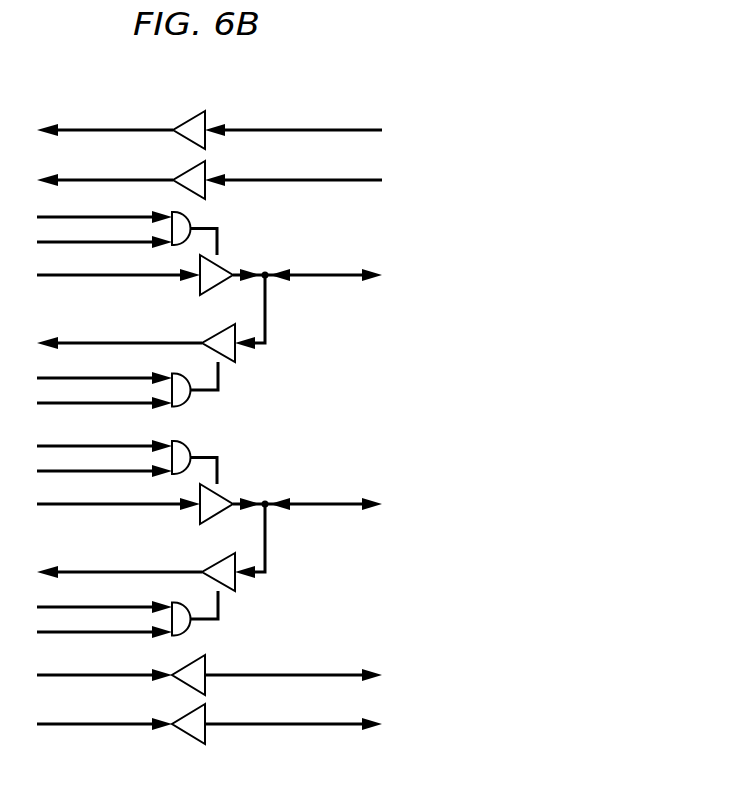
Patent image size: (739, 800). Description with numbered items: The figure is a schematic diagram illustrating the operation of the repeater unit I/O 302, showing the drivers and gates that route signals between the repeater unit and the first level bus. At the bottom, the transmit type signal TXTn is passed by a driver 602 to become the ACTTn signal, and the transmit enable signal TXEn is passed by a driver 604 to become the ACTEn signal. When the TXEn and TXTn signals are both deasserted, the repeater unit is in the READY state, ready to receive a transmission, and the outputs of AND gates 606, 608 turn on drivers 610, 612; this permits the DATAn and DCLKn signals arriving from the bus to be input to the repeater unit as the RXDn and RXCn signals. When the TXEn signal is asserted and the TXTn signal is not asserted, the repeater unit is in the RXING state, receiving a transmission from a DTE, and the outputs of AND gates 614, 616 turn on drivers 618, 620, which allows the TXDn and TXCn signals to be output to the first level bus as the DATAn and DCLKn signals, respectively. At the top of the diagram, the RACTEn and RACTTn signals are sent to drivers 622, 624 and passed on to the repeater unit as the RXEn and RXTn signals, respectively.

The repeater unit I/O 302 is at (378, 82).
The driver 602 is at (207, 732).
The driver 604 is at (207, 683).
The AND gate 606 is at (192, 627).
The AND gate 608 is at (192, 398).
The driver 610 is at (216, 561).
The driver 612 is at (216, 332).
The AND gate 614 is at (191, 455).
The AND gate 616 is at (191, 226).
The driver 618 is at (220, 493).
The driver 620 is at (220, 264).
The driver 622 is at (180, 170).
The driver 624 is at (188, 117).